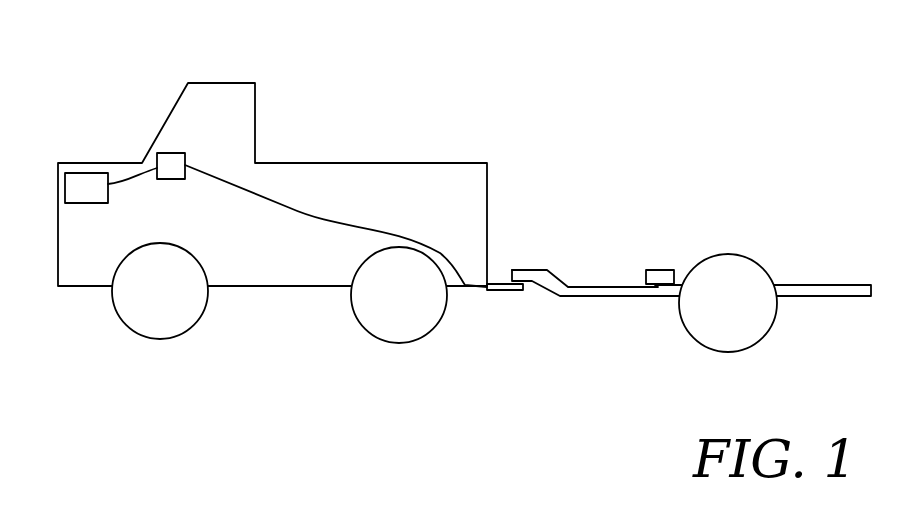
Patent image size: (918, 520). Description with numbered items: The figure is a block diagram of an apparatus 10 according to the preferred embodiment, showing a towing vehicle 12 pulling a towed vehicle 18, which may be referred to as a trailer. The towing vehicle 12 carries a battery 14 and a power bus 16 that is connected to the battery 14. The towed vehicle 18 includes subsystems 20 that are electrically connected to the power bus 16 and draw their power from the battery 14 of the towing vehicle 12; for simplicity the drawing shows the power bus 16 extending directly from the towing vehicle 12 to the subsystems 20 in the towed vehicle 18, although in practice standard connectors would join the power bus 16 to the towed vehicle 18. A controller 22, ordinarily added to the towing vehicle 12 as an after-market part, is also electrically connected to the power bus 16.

The apparatus 10 is at (555, 380).
The towing vehicle 12 is at (323, 153).
The battery 14 is at (83, 173).
The power bus 16 is at (450, 258).
The towed vehicle 18 is at (798, 275).
The subsystems 20 is at (653, 270).
The controller 22 is at (172, 153).